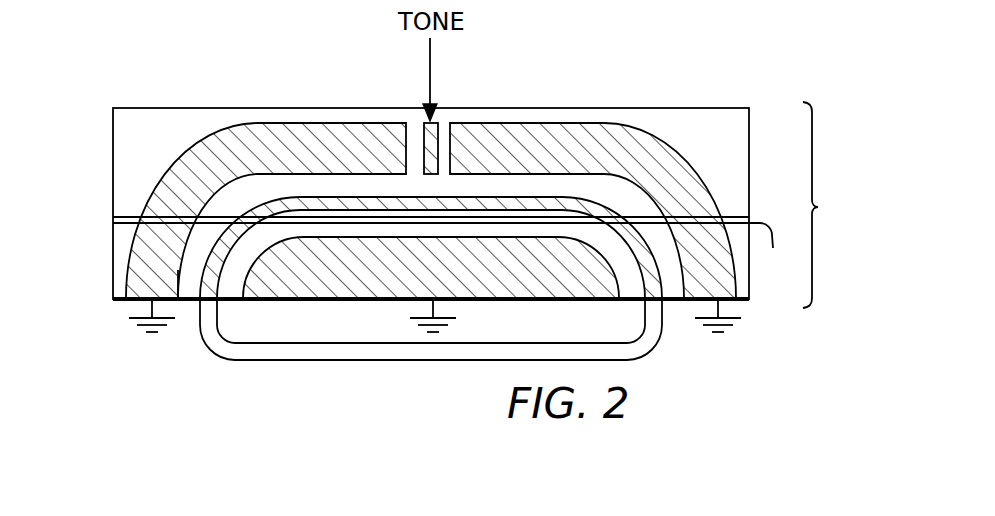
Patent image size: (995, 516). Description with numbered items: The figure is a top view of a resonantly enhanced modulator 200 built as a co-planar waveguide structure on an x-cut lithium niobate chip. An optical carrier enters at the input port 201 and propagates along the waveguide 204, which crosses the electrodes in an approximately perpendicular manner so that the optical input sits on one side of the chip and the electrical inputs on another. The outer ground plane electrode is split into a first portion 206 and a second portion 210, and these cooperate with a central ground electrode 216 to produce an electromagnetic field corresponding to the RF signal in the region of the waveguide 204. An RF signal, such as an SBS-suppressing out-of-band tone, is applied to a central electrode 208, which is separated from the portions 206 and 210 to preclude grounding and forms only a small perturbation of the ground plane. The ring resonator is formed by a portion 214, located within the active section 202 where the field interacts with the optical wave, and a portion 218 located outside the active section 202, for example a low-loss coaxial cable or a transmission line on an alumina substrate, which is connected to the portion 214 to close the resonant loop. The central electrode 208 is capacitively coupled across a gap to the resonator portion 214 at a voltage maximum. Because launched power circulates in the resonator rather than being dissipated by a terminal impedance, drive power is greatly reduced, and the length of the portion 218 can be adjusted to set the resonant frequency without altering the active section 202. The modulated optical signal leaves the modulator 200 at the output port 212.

The resonantly enhanced modulator 200 is at (99, 278).
The input port 201 is at (112, 223).
The active section 202 is at (843, 197).
The waveguide 204 is at (132, 215).
The first portion of outer ground plane electrode 206 is at (262, 124).
The central electrode 208 is at (420, 124).
The second portion of outer ground plane electrode 210 is at (558, 124).
The output port 212 is at (753, 252).
The ring resonator portion 214 is at (192, 300).
The central ground electrode 216 is at (317, 300).
The non-active portion of ring resonator 218 is at (318, 361).